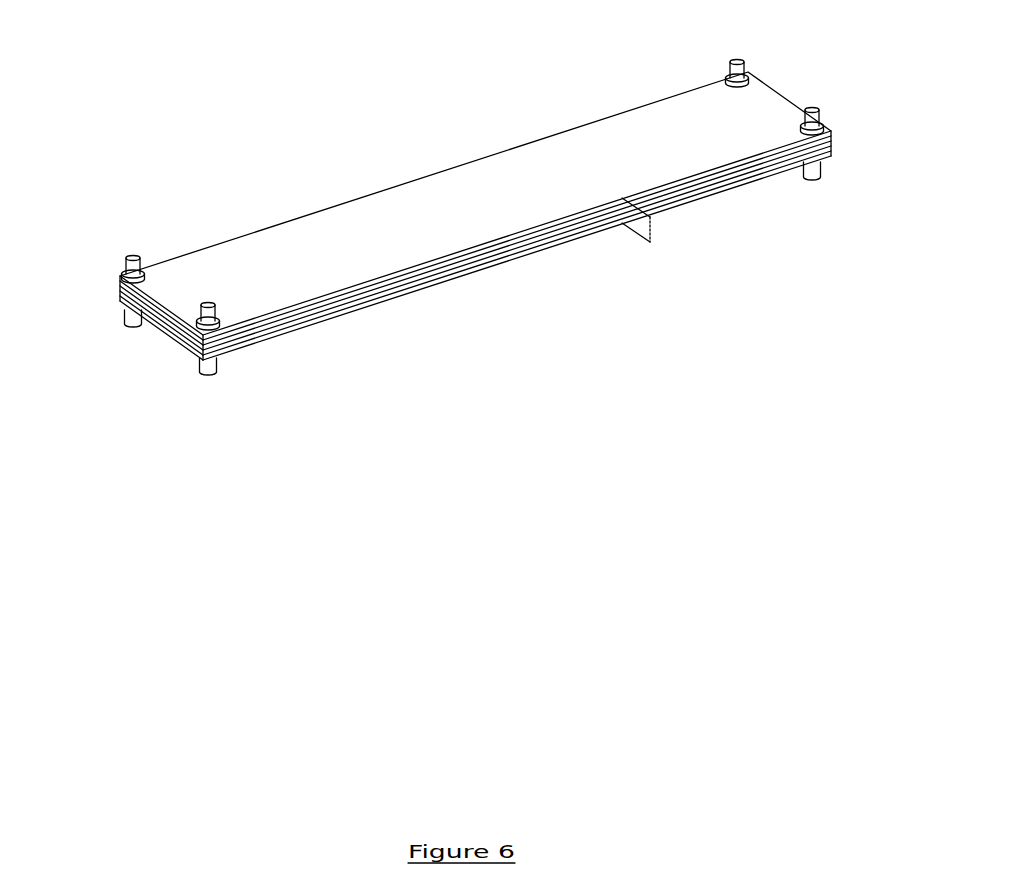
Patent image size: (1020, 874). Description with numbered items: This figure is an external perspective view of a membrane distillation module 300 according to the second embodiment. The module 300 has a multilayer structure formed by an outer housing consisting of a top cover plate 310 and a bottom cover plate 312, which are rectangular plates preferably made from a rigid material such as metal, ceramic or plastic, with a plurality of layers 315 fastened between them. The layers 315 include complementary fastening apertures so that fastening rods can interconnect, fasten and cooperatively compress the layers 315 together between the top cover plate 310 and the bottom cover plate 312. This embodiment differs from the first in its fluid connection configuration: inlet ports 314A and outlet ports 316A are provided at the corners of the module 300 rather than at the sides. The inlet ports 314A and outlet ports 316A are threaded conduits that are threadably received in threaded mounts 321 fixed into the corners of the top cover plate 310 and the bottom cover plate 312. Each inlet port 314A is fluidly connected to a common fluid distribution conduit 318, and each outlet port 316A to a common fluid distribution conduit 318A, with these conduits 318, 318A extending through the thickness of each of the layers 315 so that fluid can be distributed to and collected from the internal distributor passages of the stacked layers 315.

The membrane distillation module 300 is at (566, 323).
The top cover plate 310 is at (433, 190).
The bottom cover plate 312 is at (428, 287).
The inlet ports 314A is at (210, 296).
The layers 315 is at (652, 237).
The outlet ports 316A is at (133, 250).
The fluid distribution conduit (inlet) 318 is at (216, 309).
The fluid distribution conduit (outlet) 318A is at (126, 265).
The threaded mounts 321 is at (146, 264).